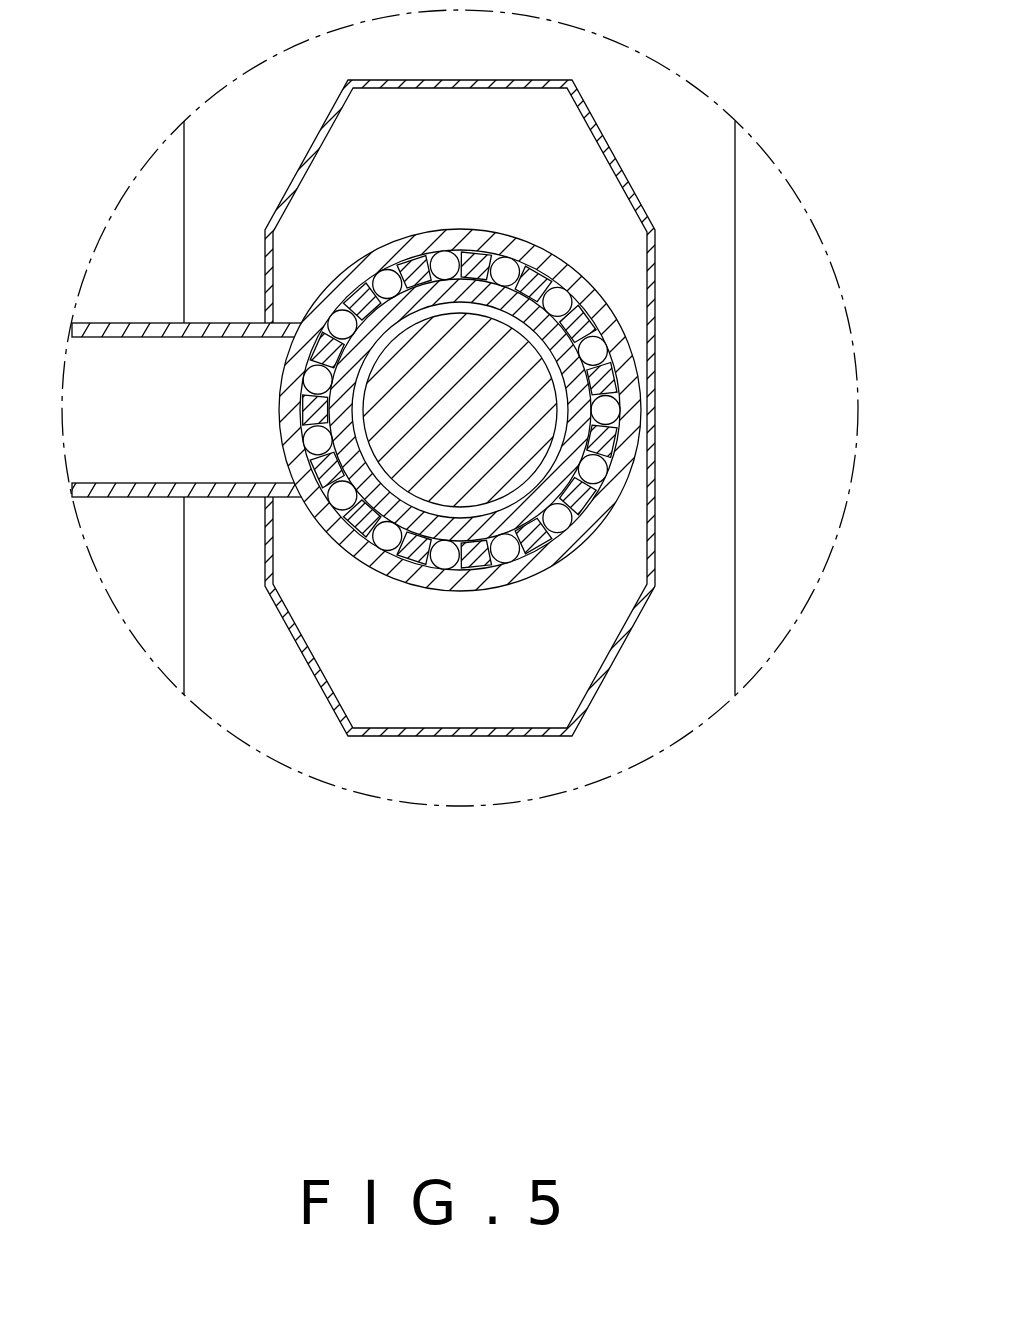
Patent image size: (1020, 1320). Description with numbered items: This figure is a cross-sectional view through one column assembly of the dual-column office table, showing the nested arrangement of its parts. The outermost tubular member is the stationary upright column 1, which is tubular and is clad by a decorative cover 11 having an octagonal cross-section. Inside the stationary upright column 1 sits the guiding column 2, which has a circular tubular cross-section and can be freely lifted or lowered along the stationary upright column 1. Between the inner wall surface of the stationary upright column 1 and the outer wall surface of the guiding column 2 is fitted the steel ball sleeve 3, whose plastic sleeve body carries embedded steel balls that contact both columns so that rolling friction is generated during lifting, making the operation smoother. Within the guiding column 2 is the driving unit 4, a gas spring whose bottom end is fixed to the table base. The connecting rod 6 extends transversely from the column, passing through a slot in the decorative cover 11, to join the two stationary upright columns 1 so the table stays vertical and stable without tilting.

The stationary upright column 1 is at (357, 540).
The guiding column 2 is at (351, 366).
The steel ball sleeve 3 is at (612, 346).
The driving unit 4 is at (449, 408).
The connecting rod 6 is at (130, 323).
The decorative cover 11 is at (310, 148).